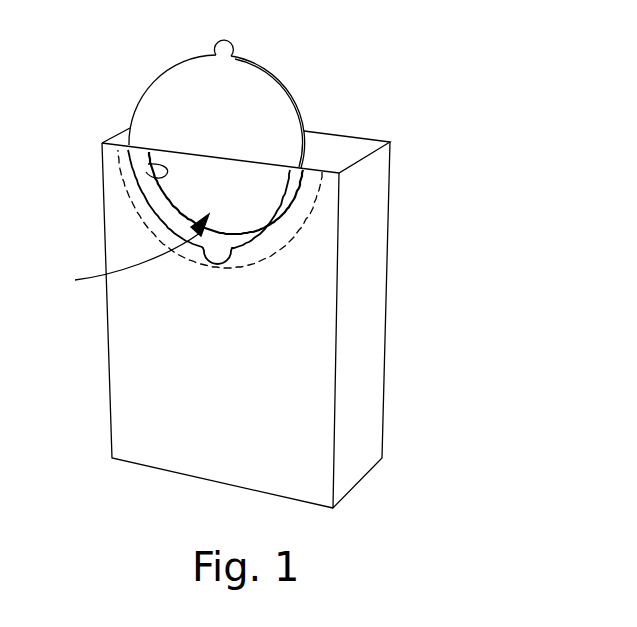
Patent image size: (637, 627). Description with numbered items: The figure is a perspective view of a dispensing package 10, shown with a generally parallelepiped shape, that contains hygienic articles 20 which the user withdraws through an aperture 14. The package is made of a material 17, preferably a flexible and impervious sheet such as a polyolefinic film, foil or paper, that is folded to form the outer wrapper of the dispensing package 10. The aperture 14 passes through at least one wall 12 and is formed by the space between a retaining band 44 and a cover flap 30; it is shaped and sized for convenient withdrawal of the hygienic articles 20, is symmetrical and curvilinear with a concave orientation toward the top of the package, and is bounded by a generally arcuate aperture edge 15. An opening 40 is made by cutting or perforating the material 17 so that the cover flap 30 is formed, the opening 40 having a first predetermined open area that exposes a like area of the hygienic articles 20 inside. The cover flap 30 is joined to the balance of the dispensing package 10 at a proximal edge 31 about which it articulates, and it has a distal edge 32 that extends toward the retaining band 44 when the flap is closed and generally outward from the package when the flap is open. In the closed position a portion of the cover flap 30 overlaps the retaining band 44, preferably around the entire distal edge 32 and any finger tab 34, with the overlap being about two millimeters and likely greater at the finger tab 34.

The dispensing package 10 is at (268, 261).
The wall 12 is at (274, 307).
The aperture 14 is at (129, 255).
The aperture edge 15 is at (148, 164).
The material 17 is at (363, 417).
The hygienic articles 20 is at (175, 208).
The cover flap 30 is at (234, 91).
The proximal edge 31 is at (308, 168).
The distal edge 32 is at (284, 92).
The finger tab 34 is at (224, 52).
The opening 40 is at (272, 229).
The retaining band 44 is at (286, 202).